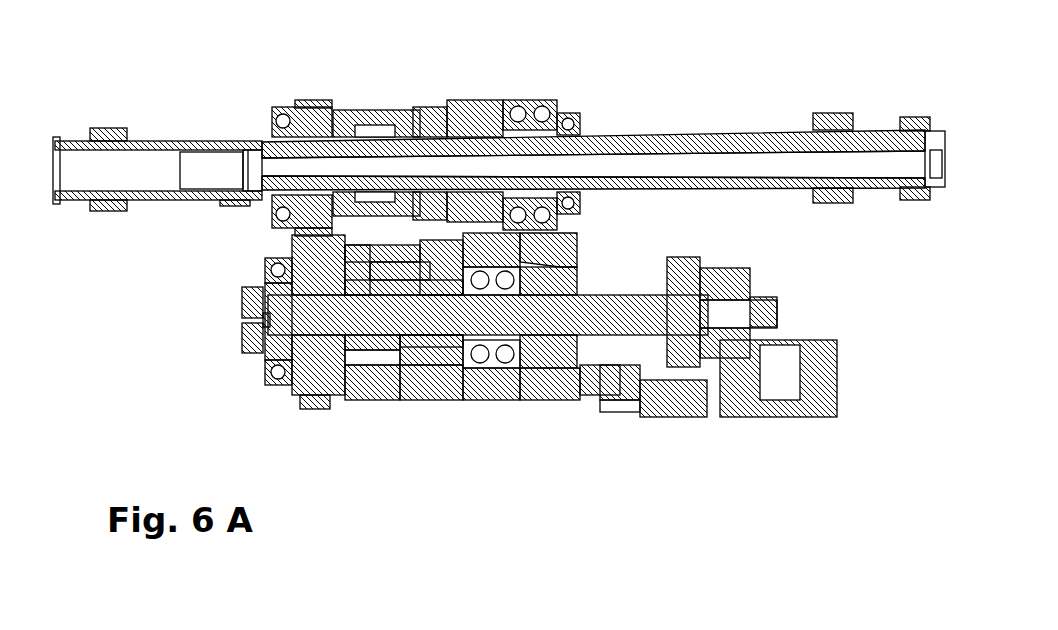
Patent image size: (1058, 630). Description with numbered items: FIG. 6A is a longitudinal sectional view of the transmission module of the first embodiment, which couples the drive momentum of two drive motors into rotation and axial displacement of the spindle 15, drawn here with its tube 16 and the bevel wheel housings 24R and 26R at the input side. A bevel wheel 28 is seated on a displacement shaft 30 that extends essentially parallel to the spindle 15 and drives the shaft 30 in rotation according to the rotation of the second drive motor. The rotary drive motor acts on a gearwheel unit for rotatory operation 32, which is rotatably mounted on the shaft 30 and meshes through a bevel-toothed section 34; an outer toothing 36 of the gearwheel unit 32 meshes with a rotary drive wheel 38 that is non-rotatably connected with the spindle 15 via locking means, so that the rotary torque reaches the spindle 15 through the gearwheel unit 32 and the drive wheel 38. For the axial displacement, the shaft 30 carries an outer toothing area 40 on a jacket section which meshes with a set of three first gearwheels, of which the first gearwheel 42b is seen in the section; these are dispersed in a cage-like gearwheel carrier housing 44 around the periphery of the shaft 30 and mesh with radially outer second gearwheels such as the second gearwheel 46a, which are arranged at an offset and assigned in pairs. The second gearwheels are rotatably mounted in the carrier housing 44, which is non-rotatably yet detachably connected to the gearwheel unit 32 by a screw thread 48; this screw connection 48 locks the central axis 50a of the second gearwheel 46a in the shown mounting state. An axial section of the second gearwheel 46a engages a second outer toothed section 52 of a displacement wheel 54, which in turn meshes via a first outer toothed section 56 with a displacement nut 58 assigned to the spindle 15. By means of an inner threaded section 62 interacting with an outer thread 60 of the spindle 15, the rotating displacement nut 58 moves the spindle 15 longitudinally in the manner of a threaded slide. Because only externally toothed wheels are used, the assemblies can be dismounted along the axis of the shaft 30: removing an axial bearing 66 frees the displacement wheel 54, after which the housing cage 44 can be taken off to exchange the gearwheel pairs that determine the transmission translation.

The spindle 15 is at (790, 133).
The tube 16 is at (78, 168).
The right bearing housing 24R is at (662, 412).
The right clamp 26R is at (820, 347).
The bevel wheel 28 is at (737, 287).
The displacement shaft 30 is at (633, 312).
The gearwheel unit for rotatory operation 32 is at (477, 243).
The bevel-toothed section 34 is at (540, 402).
The outer toothing 36 is at (475, 402).
The rotary drive wheel 38 is at (490, 98).
The outer toothing area 40 is at (383, 400).
The first gearwheel 42b is at (413, 400).
The cage-like gearwheel carrier housing 44 is at (358, 400).
The second gearwheel 46a is at (370, 227).
The screw thread 48 is at (437, 400).
The central axis 50a is at (395, 250).
The second outer toothed section 52 is at (352, 372).
The displacement wheel 54 is at (282, 396).
The first outer toothed section 56 is at (292, 240).
The displacement nut 58 is at (343, 100).
The outer thread 60 is at (245, 150).
The inner threaded section 62 is at (305, 110).
The axial bearing 66 is at (243, 333).